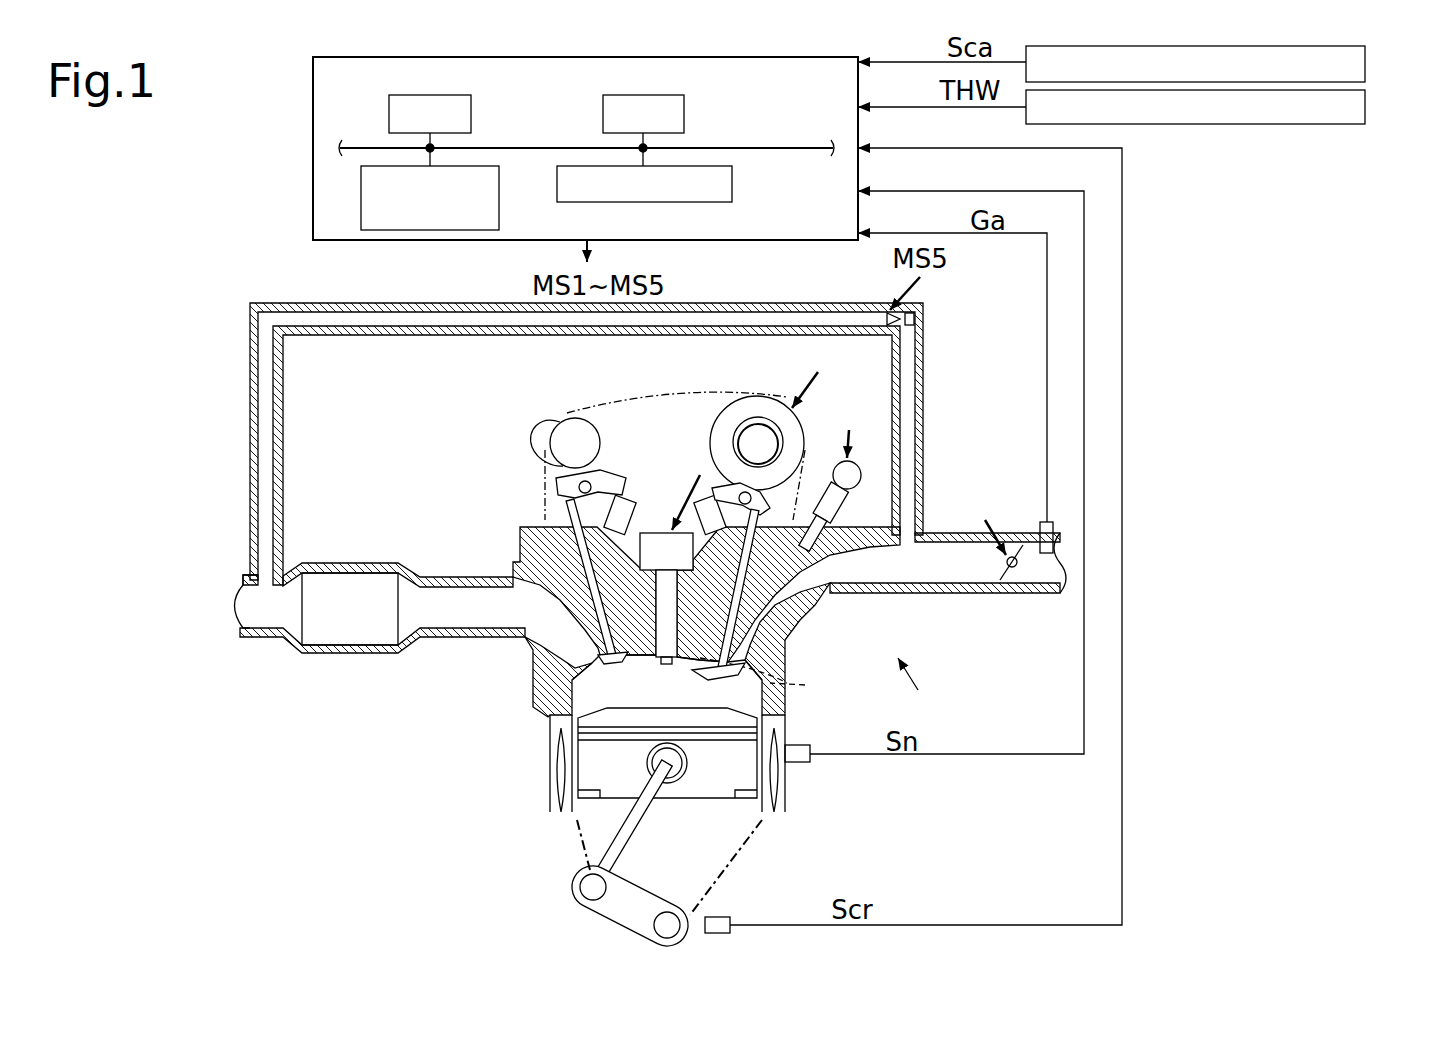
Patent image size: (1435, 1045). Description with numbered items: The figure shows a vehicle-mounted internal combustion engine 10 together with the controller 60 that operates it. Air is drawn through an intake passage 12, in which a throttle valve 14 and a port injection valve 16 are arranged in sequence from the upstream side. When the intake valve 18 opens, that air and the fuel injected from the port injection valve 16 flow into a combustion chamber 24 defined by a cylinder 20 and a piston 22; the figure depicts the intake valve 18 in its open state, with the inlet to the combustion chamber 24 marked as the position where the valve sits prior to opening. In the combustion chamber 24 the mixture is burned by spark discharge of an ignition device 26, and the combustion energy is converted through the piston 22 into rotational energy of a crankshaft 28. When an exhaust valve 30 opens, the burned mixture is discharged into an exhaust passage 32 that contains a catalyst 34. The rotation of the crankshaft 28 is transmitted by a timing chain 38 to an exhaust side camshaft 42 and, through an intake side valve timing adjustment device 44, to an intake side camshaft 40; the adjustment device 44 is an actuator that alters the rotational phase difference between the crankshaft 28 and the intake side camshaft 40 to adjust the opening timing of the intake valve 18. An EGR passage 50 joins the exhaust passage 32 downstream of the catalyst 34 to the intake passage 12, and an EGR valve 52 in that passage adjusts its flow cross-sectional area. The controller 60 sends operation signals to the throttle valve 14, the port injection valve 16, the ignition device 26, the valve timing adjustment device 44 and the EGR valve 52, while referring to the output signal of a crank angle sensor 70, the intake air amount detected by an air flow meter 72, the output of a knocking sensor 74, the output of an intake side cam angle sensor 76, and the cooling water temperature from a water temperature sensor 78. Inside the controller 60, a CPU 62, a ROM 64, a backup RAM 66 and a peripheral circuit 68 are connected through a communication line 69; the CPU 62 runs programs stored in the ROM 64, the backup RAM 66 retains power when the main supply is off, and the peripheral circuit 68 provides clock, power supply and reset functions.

The internal combustion engine 10 is at (651, 643).
The intake passage 12 is at (978, 585).
The throttle valve 14 is at (1020, 590).
The port injection valve 16 is at (838, 525).
The intake valve 18 is at (778, 650).
The cylinder 20 is at (780, 705).
The piston 22 is at (580, 762).
The combustion chamber 24 is at (597, 698).
The ignition device 26 is at (655, 533).
The crankshaft 28 is at (672, 905).
The exhaust valve 30 is at (598, 605).
The exhaust passage 32 is at (486, 580).
The catalyst 34 is at (348, 572).
The timing chain 38 is at (750, 858).
The intake side camshaft 40 is at (750, 430).
The exhaust side camshaft 42 is at (600, 430).
The intake side valve timing adjustment device 44 is at (785, 400).
The EGR passage 50 is at (350, 312).
The EGR valve 52 is at (880, 318).
The controller 60 is at (594, 144).
The CPU 62 is at (471, 118).
The ROM 64 is at (684, 118).
The backup RAM 66 is at (732, 185).
The peripheral circuit 68 is at (499, 218).
The communication line 69 is at (790, 148).
The crank angle sensor 70 is at (725, 917).
The air flow meter 72 is at (1045, 522).
The knocking sensor 74 is at (812, 758).
The intake side cam angle sensor 76 is at (1365, 68).
The water temperature sensor 78 is at (1365, 112).